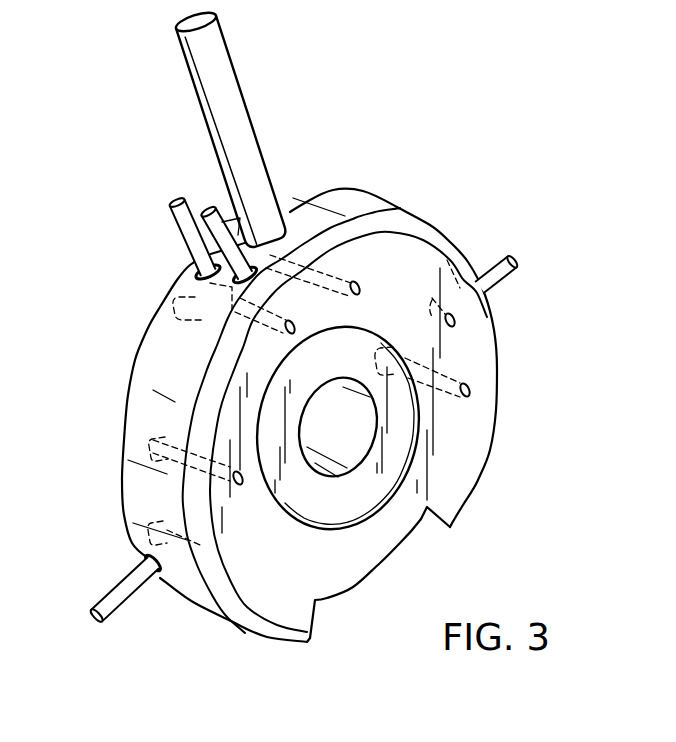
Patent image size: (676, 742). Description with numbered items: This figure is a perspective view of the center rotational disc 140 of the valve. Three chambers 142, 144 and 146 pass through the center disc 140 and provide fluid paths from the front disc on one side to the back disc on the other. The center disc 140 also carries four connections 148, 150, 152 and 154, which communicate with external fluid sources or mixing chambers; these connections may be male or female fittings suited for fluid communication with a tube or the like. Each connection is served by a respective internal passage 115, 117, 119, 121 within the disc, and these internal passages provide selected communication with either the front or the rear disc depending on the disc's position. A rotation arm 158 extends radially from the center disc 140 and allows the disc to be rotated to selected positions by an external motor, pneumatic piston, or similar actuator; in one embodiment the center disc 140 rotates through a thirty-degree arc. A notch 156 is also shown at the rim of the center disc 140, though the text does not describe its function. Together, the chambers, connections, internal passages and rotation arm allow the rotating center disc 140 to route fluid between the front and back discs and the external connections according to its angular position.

The center rotational disc 140 is at (440, 166).
The internal passage 115 is at (440, 268).
The internal passage 117 is at (176, 540).
The internal passage 119 is at (281, 320).
The internal passage 121 is at (193, 318).
The chamber 142 is at (437, 386).
The chamber 144 is at (160, 462).
The chamber 146 is at (344, 280).
The connection 148 is at (483, 272).
The connection 150 is at (133, 597).
The connection 152 is at (227, 218).
The connection 154 is at (183, 242).
The notch 156 is at (426, 511).
The rotation arm 158 is at (243, 114).